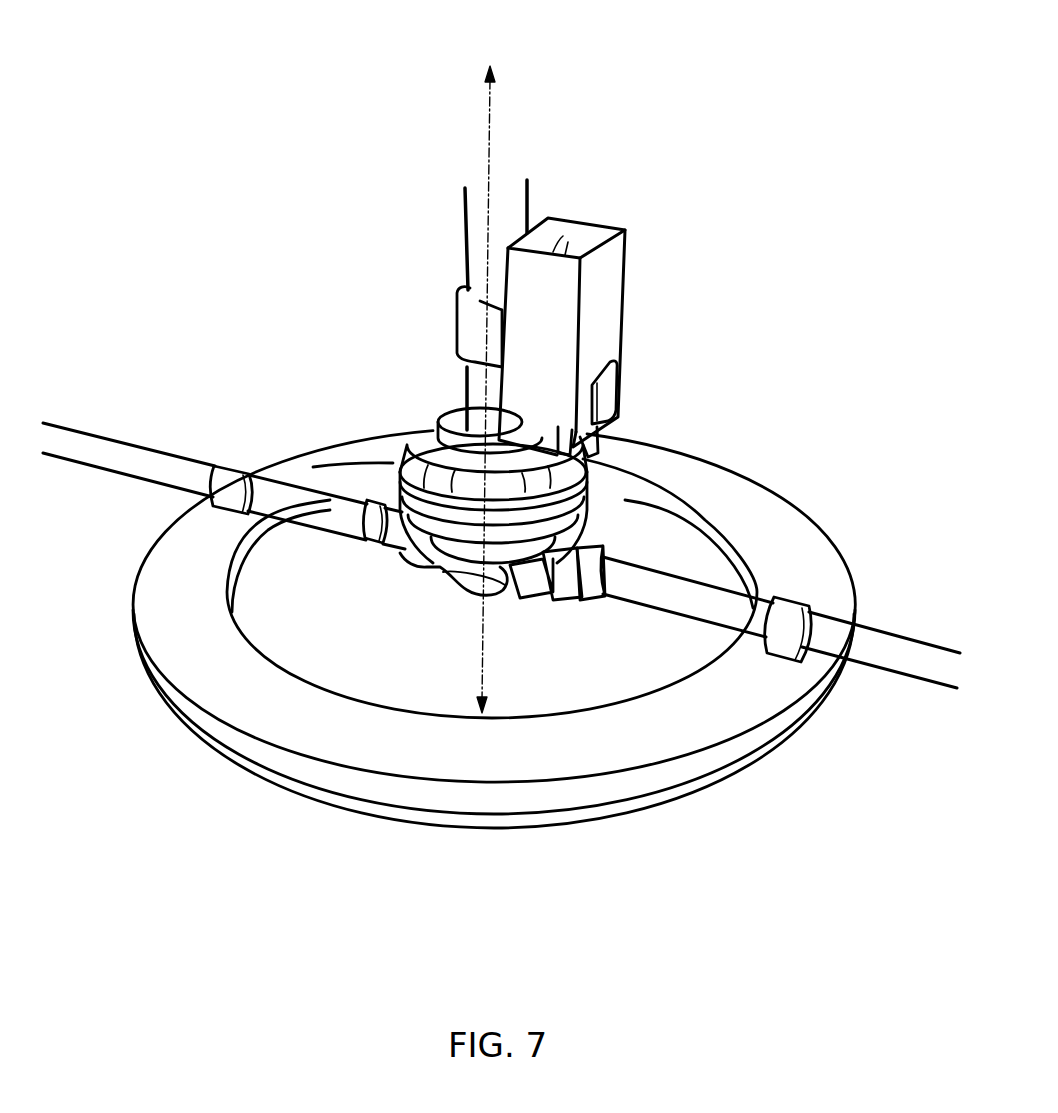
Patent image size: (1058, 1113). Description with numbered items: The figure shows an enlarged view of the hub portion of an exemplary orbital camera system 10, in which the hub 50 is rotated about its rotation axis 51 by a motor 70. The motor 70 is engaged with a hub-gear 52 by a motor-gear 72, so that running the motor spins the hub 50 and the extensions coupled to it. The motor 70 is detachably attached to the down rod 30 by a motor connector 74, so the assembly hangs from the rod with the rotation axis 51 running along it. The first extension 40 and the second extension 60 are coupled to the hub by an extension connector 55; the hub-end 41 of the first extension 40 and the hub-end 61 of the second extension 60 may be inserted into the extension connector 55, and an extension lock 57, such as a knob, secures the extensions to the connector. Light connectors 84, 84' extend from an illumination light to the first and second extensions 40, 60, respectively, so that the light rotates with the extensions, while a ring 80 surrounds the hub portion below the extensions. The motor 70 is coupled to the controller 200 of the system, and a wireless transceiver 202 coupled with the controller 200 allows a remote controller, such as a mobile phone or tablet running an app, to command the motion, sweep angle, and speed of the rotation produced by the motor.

The orbital camera system 10 is at (409, 86).
The down rod 30 is at (463, 203).
The first extension 40 is at (194, 455).
The hub-end of the first extension 41 is at (352, 503).
The hub 50 is at (438, 420).
The rotation axis 51 is at (491, 104).
The hub-gear 52 is at (420, 433).
The extension connector 55 is at (613, 602).
The extension lock 57 is at (450, 577).
The second extension 60 is at (880, 628).
The hub-end of the second extension 61 is at (622, 598).
The motor 70 is at (600, 290).
The motor-gear 72 is at (603, 449).
The motor connector 74 is at (475, 318).
The float ring 80 is at (188, 677).
The light connector 84 is at (218, 441).
The light connector 84' is at (796, 553).
The controller 200 is at (567, 250).
The wireless transceiver 202 is at (556, 248).